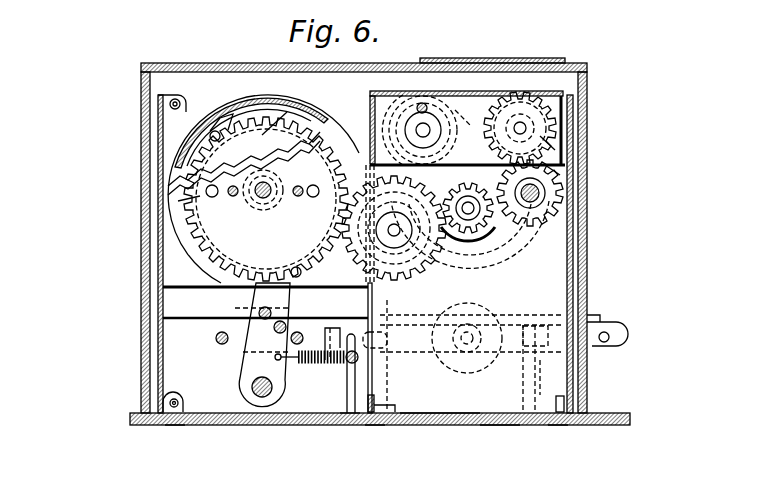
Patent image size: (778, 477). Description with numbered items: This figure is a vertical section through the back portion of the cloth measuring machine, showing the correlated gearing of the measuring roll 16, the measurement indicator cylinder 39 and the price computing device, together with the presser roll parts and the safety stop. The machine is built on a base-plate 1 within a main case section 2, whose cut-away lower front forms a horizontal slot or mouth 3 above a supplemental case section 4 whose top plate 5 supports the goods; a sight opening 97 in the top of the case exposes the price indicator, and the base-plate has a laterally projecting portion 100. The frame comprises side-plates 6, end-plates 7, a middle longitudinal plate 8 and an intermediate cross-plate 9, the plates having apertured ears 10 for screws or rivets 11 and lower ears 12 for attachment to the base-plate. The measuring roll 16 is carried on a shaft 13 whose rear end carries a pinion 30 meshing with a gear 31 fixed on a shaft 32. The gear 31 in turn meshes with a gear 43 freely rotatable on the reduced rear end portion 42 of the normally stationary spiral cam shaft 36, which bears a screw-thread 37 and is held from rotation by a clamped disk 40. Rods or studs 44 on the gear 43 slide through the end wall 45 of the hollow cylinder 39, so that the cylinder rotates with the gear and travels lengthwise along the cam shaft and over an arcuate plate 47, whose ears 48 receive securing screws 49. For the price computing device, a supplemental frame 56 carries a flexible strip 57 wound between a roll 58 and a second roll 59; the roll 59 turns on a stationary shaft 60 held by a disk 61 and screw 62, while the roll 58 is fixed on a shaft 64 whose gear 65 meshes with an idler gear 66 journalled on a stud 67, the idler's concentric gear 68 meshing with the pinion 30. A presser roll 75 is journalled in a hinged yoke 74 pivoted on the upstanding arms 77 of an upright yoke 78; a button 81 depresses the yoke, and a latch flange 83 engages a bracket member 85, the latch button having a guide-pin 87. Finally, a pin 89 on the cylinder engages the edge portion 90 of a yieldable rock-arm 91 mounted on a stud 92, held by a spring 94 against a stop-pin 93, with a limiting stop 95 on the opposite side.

The base-plate 1 is at (446, 420).
The main case section 2 is at (590, 250).
The horizontal slot or mouth 3 is at (170, 301).
The supplemental case section 4 is at (171, 356).
The top plate 5 is at (185, 315).
The side-plates 6 is at (585, 270).
The end-plates 7 is at (176, 125).
The middle longitudinal plate 8 is at (371, 96).
The intermediate cross-plate 9 is at (484, 394).
The ears 10 is at (378, 396).
The screws or rivets 11 is at (173, 400).
The ears 12 is at (555, 418).
The shaft 13 is at (468, 207).
The measuring roll 16 is at (574, 274).
The small gear or pinion 30 is at (470, 240).
The gear 31 is at (392, 285).
The shaft 32 is at (394, 228).
The spiral cam shaft 36 is at (262, 198).
The screw-thread 37 is at (280, 198).
The hollow cylinder 39 is at (287, 112).
The circular plate or disk 40 is at (294, 183).
The rear end portion 42 is at (233, 196).
The gear 43 is at (213, 252).
The elongated rods or studs 44 is at (207, 191).
The end wall 45 is at (178, 201).
The arcuate plate 47 is at (228, 142).
The ears 48 is at (218, 131).
The securing screws 49 is at (190, 148).
The supplemental frame 56 is at (472, 118).
The flexible strip or tape 57 is at (510, 95).
The roll 58 is at (542, 108).
The second roll 59 is at (458, 112).
The shaft 60 is at (410, 120).
The disk 61 is at (442, 100).
The screw 62 is at (422, 128).
The shaft 64 is at (522, 128).
The gear 65 is at (540, 136).
The intermediate idler gear 66 is at (548, 166).
The stub-shaft or stud 67 is at (543, 193).
The gear 68 is at (560, 206).
The horizontally-hinged yoke or frame 74 is at (337, 328).
The presser roll 75 is at (458, 378).
The upstanding arms 77 is at (348, 388).
The upright yoke 78 is at (348, 413).
The finger-piece or button 81 is at (605, 322).
The flange portion 83 is at (563, 332).
The bracket member 85 is at (552, 379).
The guide-pin 87 is at (618, 345).
The pin or stud 89 is at (299, 270).
The edge portion 90 is at (279, 290).
The yieldable stop element or rock-arm 91 is at (262, 352).
The stub-shaft or stud 92 is at (262, 392).
The stop-pin 93 is at (299, 334).
The spring 94 is at (320, 363).
The limiting stop 95 is at (218, 337).
The sight opening 97 is at (552, 62).
The laterally projecting portion 100 is at (605, 414).